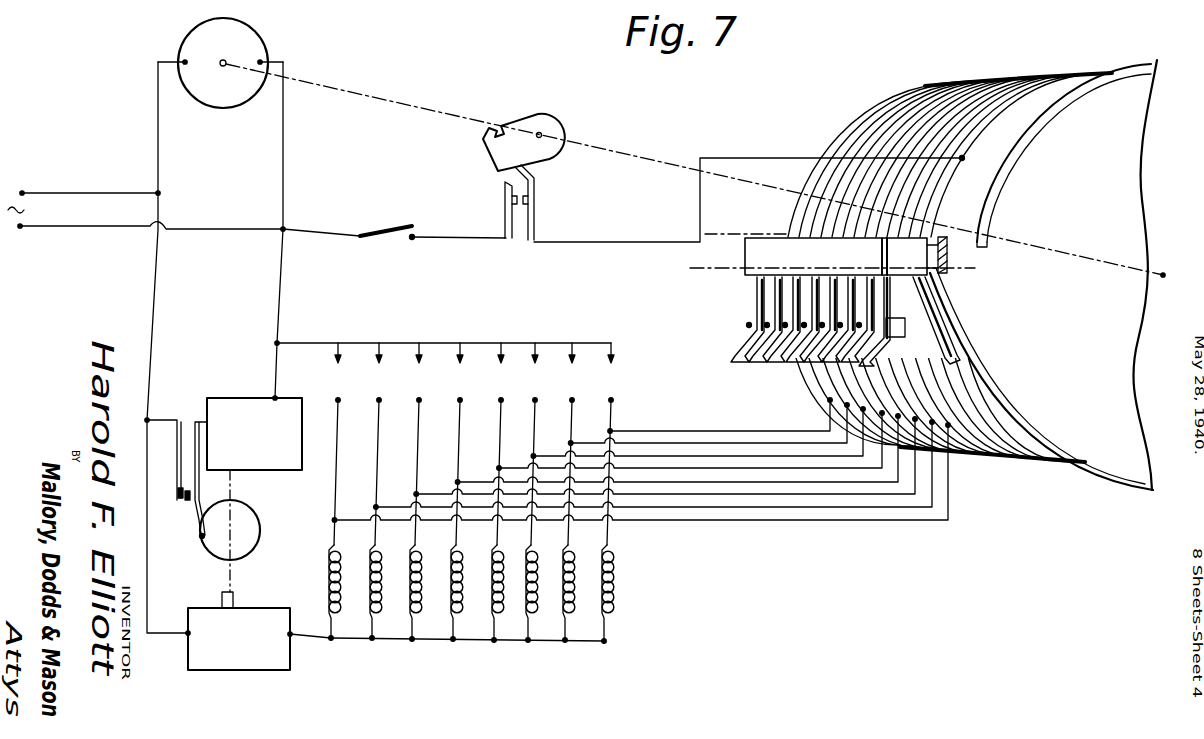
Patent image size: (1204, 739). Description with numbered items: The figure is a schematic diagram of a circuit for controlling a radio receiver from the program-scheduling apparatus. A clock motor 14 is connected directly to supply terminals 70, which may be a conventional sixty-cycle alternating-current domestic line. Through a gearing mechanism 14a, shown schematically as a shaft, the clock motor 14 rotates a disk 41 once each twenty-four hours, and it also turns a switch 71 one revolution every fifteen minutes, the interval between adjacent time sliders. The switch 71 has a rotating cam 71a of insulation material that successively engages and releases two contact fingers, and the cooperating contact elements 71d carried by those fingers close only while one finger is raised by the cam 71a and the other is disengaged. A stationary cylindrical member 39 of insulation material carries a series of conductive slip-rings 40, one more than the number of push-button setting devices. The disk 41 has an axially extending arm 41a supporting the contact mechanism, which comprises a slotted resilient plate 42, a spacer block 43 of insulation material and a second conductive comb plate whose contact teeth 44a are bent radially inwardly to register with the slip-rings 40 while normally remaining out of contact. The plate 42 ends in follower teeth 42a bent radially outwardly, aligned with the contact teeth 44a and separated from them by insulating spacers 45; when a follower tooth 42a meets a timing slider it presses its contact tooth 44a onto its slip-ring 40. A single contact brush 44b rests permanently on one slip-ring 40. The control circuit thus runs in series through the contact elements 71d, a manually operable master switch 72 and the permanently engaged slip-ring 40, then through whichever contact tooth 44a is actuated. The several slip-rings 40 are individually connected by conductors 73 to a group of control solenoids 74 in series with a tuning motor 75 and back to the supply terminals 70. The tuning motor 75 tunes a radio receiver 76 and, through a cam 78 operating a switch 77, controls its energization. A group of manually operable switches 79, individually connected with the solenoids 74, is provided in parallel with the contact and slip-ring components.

The clock motor 14 is at (248, 43).
The gearing mechanism 14a is at (420, 106).
The stationary cylindrical member 39 is at (1030, 86).
The slip-rings 40 is at (862, 118).
The disk 41 is at (1135, 182).
The axially extending arm 41a is at (947, 237).
The slotted resilient plate 42 is at (748, 262).
The follower teeth 42a is at (762, 364).
The spacer block 43 is at (910, 260).
The contact teeth 44a is at (952, 385).
The contact brush 44b is at (952, 358).
The spacers 45 is at (768, 322).
The supply terminals 70 is at (33, 222).
The switch 71 is at (536, 173).
The rotating cam 71a is at (545, 122).
The contact elements 71d is at (534, 208).
The master switch 72 is at (383, 227).
The conductors 73 is at (748, 488).
The control solenoids 74 is at (462, 613).
The tuning motor 75 is at (248, 668).
The radio receiver 76 is at (235, 398).
The switch 77 is at (190, 502).
The cam 78 is at (256, 536).
The manually operable switches 79 is at (440, 358).